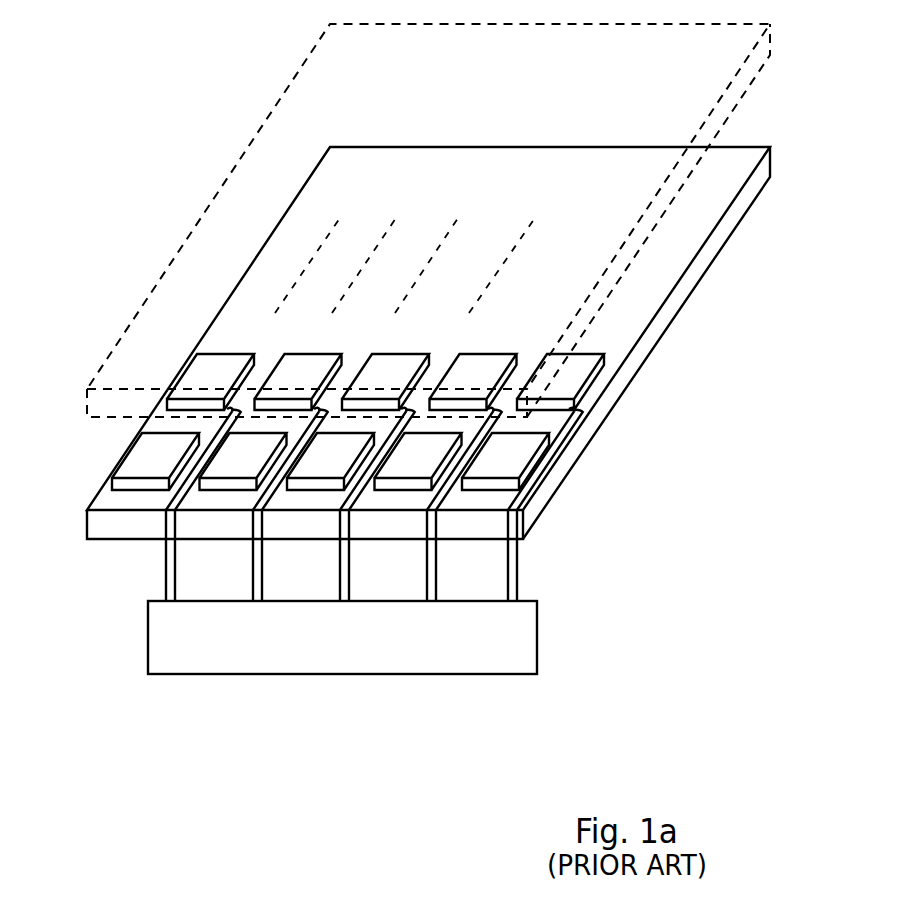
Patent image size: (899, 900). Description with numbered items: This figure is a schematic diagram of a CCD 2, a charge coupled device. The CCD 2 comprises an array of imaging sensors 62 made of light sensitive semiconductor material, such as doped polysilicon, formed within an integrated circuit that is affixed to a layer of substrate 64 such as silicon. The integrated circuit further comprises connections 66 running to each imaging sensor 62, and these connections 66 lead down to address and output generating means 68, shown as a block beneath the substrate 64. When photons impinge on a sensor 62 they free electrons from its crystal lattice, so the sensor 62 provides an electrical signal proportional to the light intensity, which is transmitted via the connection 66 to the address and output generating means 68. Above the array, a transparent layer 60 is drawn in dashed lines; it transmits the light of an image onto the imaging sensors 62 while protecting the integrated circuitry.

The CCD 2 is at (140, 100).
The transparent layer 60 is at (770, 30).
The imaging sensors 62 is at (157, 458).
The substrate 64 is at (690, 275).
The connections 66 is at (542, 470).
The address and output generating means 68 is at (537, 628).